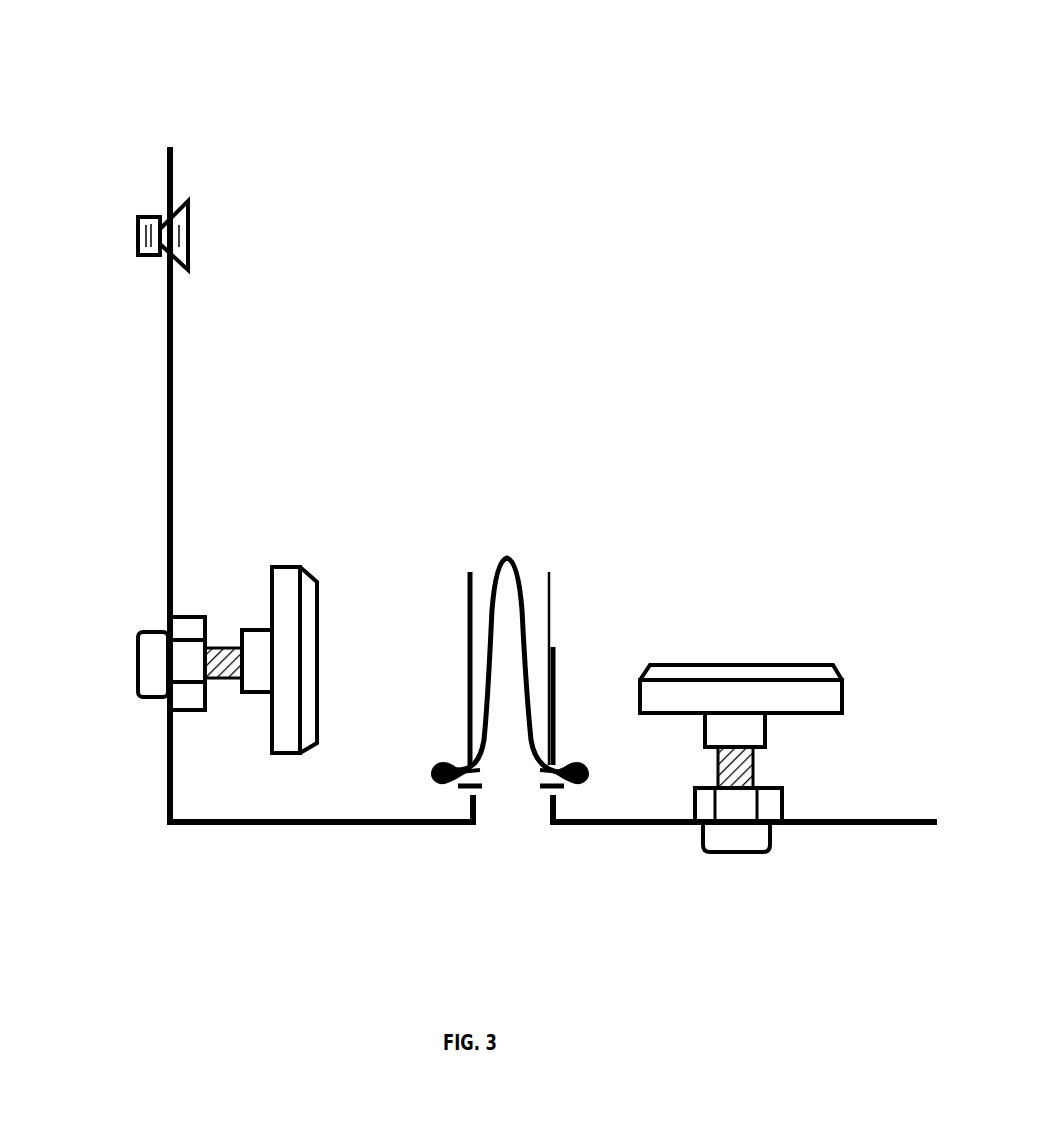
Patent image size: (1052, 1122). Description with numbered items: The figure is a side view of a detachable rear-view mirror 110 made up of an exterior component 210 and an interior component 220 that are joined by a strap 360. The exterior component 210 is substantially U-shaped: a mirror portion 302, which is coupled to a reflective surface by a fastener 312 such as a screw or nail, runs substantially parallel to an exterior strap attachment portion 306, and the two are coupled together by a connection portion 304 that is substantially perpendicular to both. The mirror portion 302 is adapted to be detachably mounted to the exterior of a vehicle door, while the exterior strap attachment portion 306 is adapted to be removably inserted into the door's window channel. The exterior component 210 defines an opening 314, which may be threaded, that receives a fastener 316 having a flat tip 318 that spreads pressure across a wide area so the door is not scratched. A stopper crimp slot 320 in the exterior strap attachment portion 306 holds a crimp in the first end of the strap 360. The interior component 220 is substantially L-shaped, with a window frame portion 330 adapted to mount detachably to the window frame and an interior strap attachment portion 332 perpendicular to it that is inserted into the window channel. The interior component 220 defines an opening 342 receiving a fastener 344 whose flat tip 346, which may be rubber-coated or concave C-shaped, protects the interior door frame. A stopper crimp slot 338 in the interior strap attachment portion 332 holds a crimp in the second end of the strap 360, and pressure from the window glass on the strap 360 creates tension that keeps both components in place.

The detachable rear-view mirror 110 is at (100, 45).
The exterior component 210 is at (102, 423).
The interior component 220 is at (644, 866).
The mirror portion 302 is at (173, 412).
The connection portion 304 is at (305, 826).
The exterior strap attachment portion 306 is at (466, 650).
The fastener 312 is at (150, 218).
The opening 314 is at (189, 618).
The fastener 316 is at (140, 646).
The flat tip 318 is at (318, 659).
The stopper crimp slot 320 is at (462, 765).
The window frame portion 330 is at (582, 826).
The interior strap attachment portion 332 is at (551, 594).
The stopper crimp slot 338 is at (555, 770).
The opening 342 is at (770, 790).
The fastener 344 is at (740, 855).
The flat tip 346 is at (730, 665).
The strap 360 is at (500, 558).